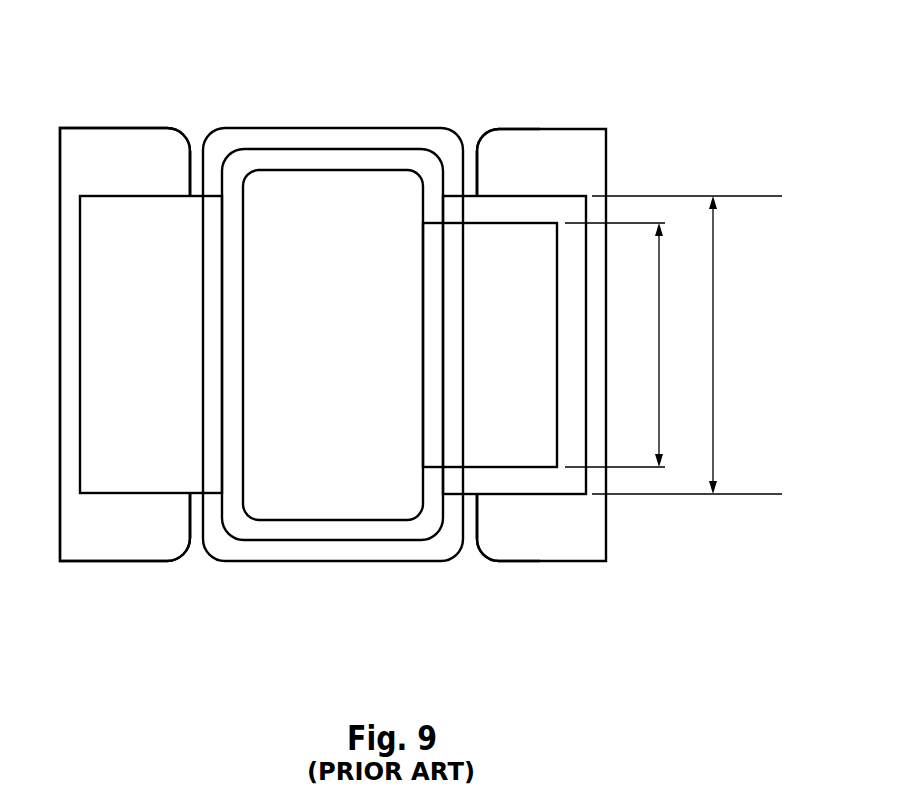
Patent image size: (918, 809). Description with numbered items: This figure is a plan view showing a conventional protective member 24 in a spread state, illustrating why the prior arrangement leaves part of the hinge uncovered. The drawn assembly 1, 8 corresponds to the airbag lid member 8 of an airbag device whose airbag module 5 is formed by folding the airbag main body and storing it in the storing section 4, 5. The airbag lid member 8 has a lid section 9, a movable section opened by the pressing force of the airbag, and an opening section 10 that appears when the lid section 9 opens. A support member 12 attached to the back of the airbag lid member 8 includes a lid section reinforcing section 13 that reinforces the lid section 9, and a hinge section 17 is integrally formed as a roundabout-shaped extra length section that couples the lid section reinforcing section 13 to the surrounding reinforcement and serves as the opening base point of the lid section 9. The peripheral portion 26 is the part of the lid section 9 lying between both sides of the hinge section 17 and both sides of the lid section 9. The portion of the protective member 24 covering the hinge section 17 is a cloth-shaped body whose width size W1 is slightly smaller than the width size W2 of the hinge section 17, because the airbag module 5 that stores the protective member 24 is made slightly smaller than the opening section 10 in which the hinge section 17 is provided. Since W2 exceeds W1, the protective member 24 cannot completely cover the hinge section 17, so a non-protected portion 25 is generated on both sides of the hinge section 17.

The semiconductor device 1 is at (333, 278).
The airbag lid member 8 is at (355, 112).
The storing section 4 is at (333, 308).
The airbag module 5 is at (250, 150).
The lid section 9 is at (90, 127).
The opening section 10 is at (296, 131).
The support member 12 is at (73, 603).
The lid section reinforcing section 13 is at (98, 473).
The hinge section 17 is at (193, 473).
The protective member 24 is at (520, 470).
The non-protected portion 25 is at (510, 203).
The peripheral portion 26 is at (503, 157).
The width size of protective member W1 is at (631, 345).
The width size of hinge section W2 is at (687, 345).